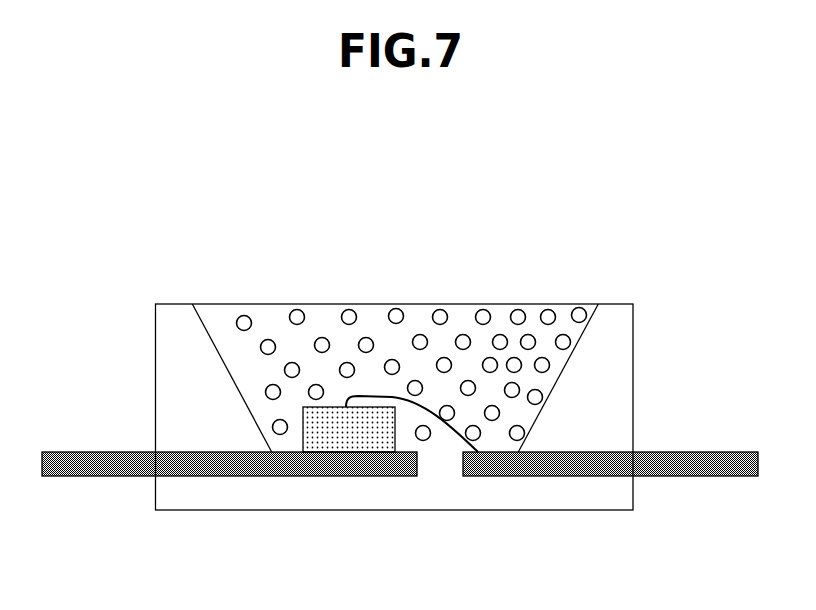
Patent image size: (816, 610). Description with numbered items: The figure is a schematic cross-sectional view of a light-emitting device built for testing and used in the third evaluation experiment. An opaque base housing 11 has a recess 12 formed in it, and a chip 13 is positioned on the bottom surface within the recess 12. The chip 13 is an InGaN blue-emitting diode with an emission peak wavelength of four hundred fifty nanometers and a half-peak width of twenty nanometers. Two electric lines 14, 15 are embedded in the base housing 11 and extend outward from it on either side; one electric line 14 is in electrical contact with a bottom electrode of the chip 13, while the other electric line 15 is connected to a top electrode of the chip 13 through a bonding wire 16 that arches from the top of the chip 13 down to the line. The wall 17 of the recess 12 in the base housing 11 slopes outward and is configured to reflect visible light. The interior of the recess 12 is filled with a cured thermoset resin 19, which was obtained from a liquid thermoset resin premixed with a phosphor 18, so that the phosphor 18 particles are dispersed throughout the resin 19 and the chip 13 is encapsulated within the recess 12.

The base housing 11 is at (622, 347).
The recess 12 is at (440, 444).
The chip 13 is at (330, 413).
The electric line 14 is at (88, 452).
The electric line 15 is at (724, 455).
The bonding wire 16 is at (373, 396).
The wall 17 is at (209, 315).
The phosphor 18 is at (578, 308).
The cured thermoset resin 19 is at (265, 317).